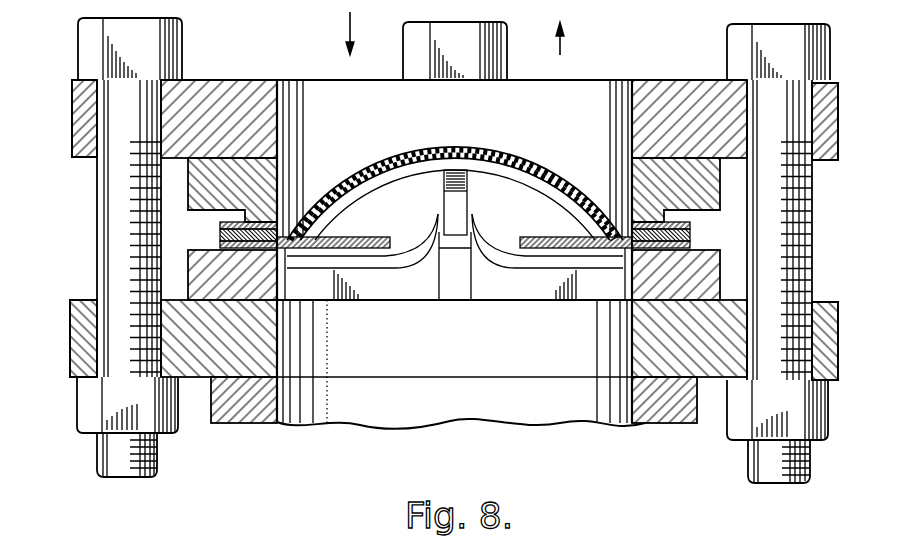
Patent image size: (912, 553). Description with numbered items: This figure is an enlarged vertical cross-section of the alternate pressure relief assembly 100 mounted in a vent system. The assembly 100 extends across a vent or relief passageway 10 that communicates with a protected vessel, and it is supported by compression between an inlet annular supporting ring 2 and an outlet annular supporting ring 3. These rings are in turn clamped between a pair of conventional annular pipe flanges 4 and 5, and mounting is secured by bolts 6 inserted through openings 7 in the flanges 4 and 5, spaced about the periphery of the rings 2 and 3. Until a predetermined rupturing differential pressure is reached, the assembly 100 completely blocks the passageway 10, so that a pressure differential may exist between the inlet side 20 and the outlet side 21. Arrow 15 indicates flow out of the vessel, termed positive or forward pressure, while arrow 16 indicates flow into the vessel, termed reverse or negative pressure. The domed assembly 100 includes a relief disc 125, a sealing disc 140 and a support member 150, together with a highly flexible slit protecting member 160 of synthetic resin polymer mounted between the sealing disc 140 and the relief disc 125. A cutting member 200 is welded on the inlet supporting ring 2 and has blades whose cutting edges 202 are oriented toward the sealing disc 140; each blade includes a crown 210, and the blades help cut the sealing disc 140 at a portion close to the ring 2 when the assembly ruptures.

The inlet annular supporting ring 2 is at (188, 281).
The outlet annular supporting ring 3 is at (188, 192).
The annular pipe flange 4 is at (70, 342).
The annular pipe flange 5 is at (72, 118).
The bolt 6 is at (182, 52).
The opening 7 is at (99, 118).
The vent or relief passageway 10 is at (630, 355).
The arrow 15 is at (563, 50).
The arrow 16 is at (348, 33).
The inlet side 20 is at (306, 425).
The outlet side 21 is at (289, 66).
The pressure relief assembly 100 is at (455, 171).
The relief disc 125 is at (537, 168).
The sealing disc 140 is at (352, 175).
The support member 150 is at (407, 176).
The slit protecting member 160 is at (490, 160).
The cutting member 200 is at (374, 292).
The cutting edge 202 is at (390, 244).
The crown 210 is at (437, 206).